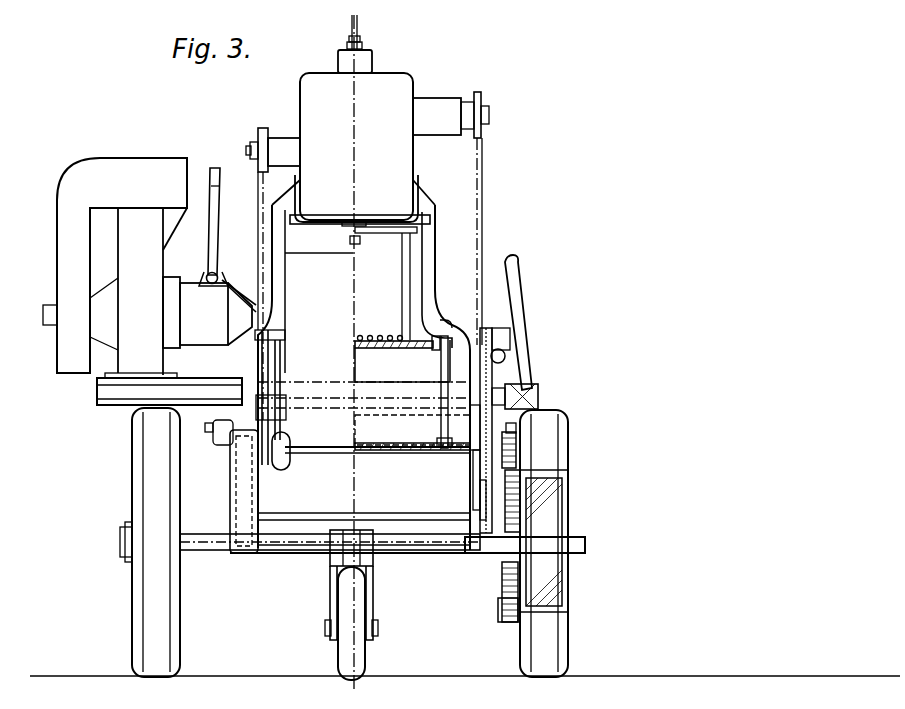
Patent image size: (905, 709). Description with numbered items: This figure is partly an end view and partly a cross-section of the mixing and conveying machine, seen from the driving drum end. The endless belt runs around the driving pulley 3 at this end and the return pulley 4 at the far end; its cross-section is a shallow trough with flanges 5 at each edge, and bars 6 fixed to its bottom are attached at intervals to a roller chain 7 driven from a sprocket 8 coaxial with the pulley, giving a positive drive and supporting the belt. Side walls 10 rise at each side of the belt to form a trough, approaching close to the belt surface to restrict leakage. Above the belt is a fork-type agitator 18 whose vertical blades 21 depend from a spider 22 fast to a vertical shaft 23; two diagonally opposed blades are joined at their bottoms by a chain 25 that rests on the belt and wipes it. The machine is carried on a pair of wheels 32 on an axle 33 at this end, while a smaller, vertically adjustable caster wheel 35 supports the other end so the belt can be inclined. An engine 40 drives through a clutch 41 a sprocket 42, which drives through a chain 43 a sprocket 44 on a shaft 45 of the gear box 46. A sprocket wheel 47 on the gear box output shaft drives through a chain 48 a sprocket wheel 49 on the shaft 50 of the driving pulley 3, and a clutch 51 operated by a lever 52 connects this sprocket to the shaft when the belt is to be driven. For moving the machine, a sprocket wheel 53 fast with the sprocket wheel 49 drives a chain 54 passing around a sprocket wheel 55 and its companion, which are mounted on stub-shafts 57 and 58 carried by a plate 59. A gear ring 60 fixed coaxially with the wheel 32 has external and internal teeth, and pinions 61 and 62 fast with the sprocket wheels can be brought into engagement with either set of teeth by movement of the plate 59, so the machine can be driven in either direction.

The driving pulley 3 is at (472, 345).
The return pulley 4 is at (402, 338).
The flanges 5 is at (436, 335).
The bars 6 is at (396, 350).
The roller chain 7 is at (448, 338).
The sprocket 8 is at (441, 425).
The side walls 10 is at (422, 264).
The agitator 18 is at (363, 218).
The vertical blades 21 is at (404, 275).
The spider 22 is at (380, 234).
The vertical shaft 23 is at (350, 239).
The chain 25 is at (368, 335).
The wheels 32 is at (160, 642).
The axle 33 is at (480, 556).
The caster wheel 35 is at (356, 657).
The engine 40 is at (138, 338).
The clutch 41 is at (200, 312).
The sprocket 42 is at (258, 308).
The chain 43 is at (262, 230).
The sprocket 44 is at (228, 221).
The shaft 45 is at (250, 150).
The gear box 46 is at (392, 105).
The sprocket wheel 47 is at (482, 100).
The chain 48 is at (480, 180).
The sprocket wheel 49 is at (412, 432).
The shaft 50 is at (376, 382).
The clutch 51 is at (521, 386).
The lever 52 is at (514, 294).
The sprocket wheel 53 is at (503, 352).
The chain 54 is at (476, 442).
The sprocket wheel 55 is at (475, 455).
The stub-shaft 57 is at (516, 420).
The stub-shaft 58 is at (502, 560).
The plate 59 is at (512, 480).
The gear ring 60 is at (504, 608).
The pinion 61 is at (514, 433).
The pinion 62 is at (480, 488).